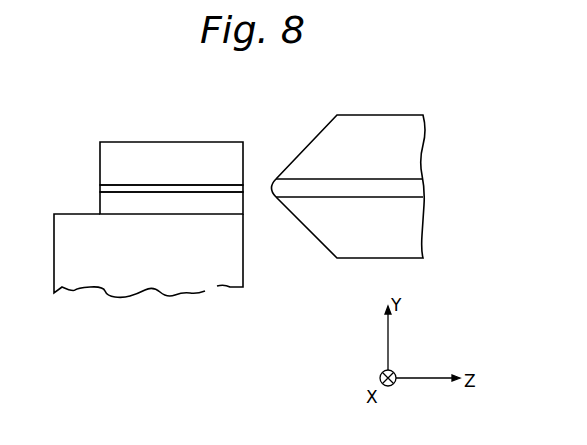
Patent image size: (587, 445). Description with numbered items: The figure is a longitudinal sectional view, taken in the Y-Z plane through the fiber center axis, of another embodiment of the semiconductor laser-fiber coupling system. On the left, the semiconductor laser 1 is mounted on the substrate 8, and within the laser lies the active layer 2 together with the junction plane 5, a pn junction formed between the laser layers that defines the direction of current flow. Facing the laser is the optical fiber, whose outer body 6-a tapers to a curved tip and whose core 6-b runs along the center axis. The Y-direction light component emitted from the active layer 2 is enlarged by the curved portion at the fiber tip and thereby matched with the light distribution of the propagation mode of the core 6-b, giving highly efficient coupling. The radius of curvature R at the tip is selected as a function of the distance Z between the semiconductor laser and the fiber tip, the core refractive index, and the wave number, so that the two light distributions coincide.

The semiconductor laser 1 is at (200, 143).
The active layer 2 is at (165, 192).
The junction plane 5 is at (130, 185).
The substrate 8 is at (157, 288).
The optical fiber body 6-a is at (393, 114).
The core 6-b is at (422, 186).
The radius of curvature R is at (280, 184).
The distance between the semiconductor laser and the fiber tip Z is at (270, 192).